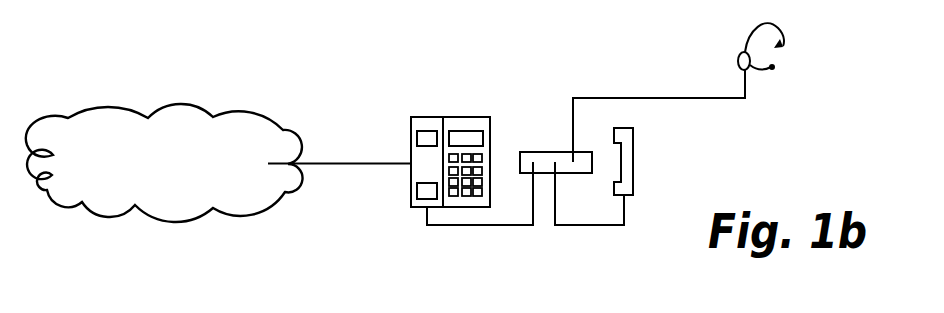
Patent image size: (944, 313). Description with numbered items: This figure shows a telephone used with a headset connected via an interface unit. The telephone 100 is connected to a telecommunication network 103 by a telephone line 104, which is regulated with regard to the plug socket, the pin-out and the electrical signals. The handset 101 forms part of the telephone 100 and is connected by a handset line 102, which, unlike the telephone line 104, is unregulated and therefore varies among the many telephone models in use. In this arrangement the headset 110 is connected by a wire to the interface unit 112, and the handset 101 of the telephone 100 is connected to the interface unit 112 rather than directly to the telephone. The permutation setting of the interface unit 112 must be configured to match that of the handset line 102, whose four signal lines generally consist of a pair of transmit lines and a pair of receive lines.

The telephone 100 is at (453, 72).
The handset 101 is at (626, 133).
The handset line 102 is at (492, 227).
The telecommunication network 103 is at (165, 163).
The telephone line 104 is at (360, 160).
The headset 110 is at (788, 78).
The interface unit 112 is at (543, 160).